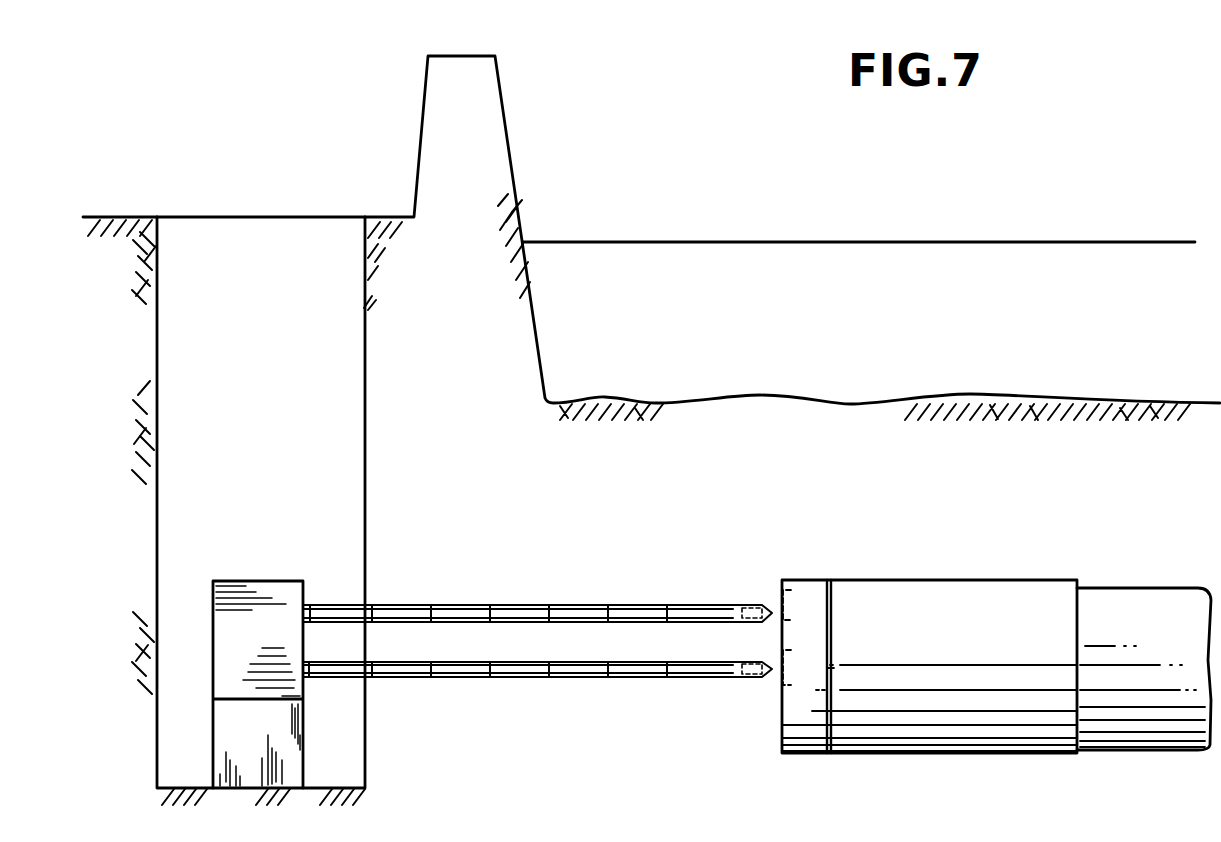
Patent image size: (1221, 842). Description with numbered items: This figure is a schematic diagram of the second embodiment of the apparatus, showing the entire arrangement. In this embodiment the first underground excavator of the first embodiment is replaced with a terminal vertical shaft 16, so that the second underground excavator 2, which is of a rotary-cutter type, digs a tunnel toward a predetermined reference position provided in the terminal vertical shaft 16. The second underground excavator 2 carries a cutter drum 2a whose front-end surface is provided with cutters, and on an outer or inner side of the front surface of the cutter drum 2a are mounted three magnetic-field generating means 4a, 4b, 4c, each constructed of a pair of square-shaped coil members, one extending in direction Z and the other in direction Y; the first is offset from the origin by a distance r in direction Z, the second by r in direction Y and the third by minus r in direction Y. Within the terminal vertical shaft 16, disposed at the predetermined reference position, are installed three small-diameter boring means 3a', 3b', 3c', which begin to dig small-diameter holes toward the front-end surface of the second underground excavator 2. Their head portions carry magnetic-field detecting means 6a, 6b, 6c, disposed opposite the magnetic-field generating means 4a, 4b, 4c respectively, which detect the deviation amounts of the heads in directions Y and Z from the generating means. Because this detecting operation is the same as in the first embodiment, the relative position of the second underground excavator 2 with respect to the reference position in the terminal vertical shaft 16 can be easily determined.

The terminal vertical shaft 16 is at (272, 386).
The small-diameter boring means 3a' is at (537, 586).
The small-diameter boring means 3b' is at (537, 704).
The small-diameter boring means 3c' is at (537, 704).
The magnetic-field detecting means 6a is at (748, 605).
The magnetic-field detecting means 6b is at (743, 704).
The magnetic-field detecting means 6c is at (748, 678).
The magnetic-field generating means 4a is at (792, 598).
The magnetic-field generating means 4b is at (848, 673).
The magnetic-field generating means 4c is at (792, 668).
The cutter drum 2a is at (818, 580).
The second underground excavator 2 is at (996, 643).